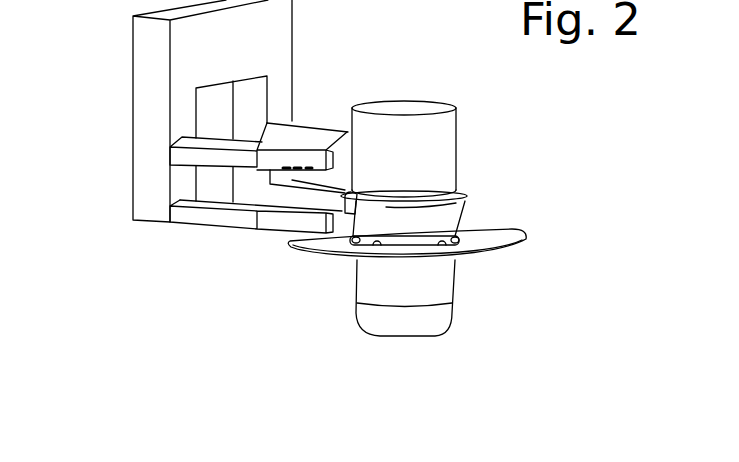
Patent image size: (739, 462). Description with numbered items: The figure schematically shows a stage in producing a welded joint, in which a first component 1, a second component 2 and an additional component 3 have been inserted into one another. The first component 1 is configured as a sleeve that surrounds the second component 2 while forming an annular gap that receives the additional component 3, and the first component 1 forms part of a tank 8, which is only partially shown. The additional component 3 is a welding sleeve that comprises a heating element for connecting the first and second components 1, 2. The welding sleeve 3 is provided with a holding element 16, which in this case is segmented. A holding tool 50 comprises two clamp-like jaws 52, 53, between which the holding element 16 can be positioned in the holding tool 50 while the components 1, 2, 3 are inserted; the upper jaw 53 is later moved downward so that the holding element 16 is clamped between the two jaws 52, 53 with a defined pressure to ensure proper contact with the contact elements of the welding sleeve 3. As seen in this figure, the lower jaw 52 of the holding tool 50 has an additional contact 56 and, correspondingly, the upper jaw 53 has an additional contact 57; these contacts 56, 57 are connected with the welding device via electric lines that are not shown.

The first component 1 is at (445, 285).
The second component 2 is at (386, 210).
The additional component (welding sleeve) 3 is at (442, 230).
The tank 8 is at (488, 247).
The holding element 16 is at (352, 212).
The holding tool 50 is at (148, 197).
The lower jaw 52 is at (275, 224).
The upper jaw 53 is at (273, 150).
The additional contact 56 is at (291, 213).
The additional contact 57 is at (300, 163).